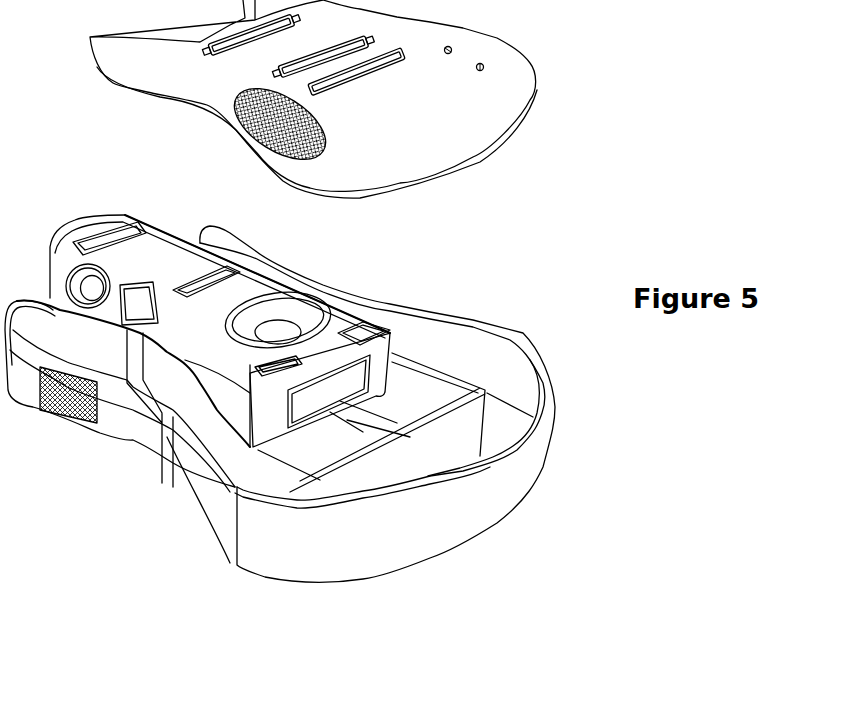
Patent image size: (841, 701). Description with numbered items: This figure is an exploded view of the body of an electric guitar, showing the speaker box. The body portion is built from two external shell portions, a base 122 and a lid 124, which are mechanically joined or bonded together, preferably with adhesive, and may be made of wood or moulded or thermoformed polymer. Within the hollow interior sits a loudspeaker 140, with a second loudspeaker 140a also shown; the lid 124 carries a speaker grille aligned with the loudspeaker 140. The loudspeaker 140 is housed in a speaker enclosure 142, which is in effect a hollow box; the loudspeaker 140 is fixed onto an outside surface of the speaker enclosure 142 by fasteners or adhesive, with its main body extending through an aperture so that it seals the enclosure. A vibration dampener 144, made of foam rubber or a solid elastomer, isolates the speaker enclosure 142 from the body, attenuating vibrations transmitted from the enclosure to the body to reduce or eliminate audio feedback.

The base 122 is at (462, 343).
The lid 124 is at (448, 65).
The loudspeaker 140 is at (200, 424).
The loudspeaker 140a is at (82, 285).
The speaker enclosure 142 is at (187, 318).
The vibration dampener 144 is at (310, 395).